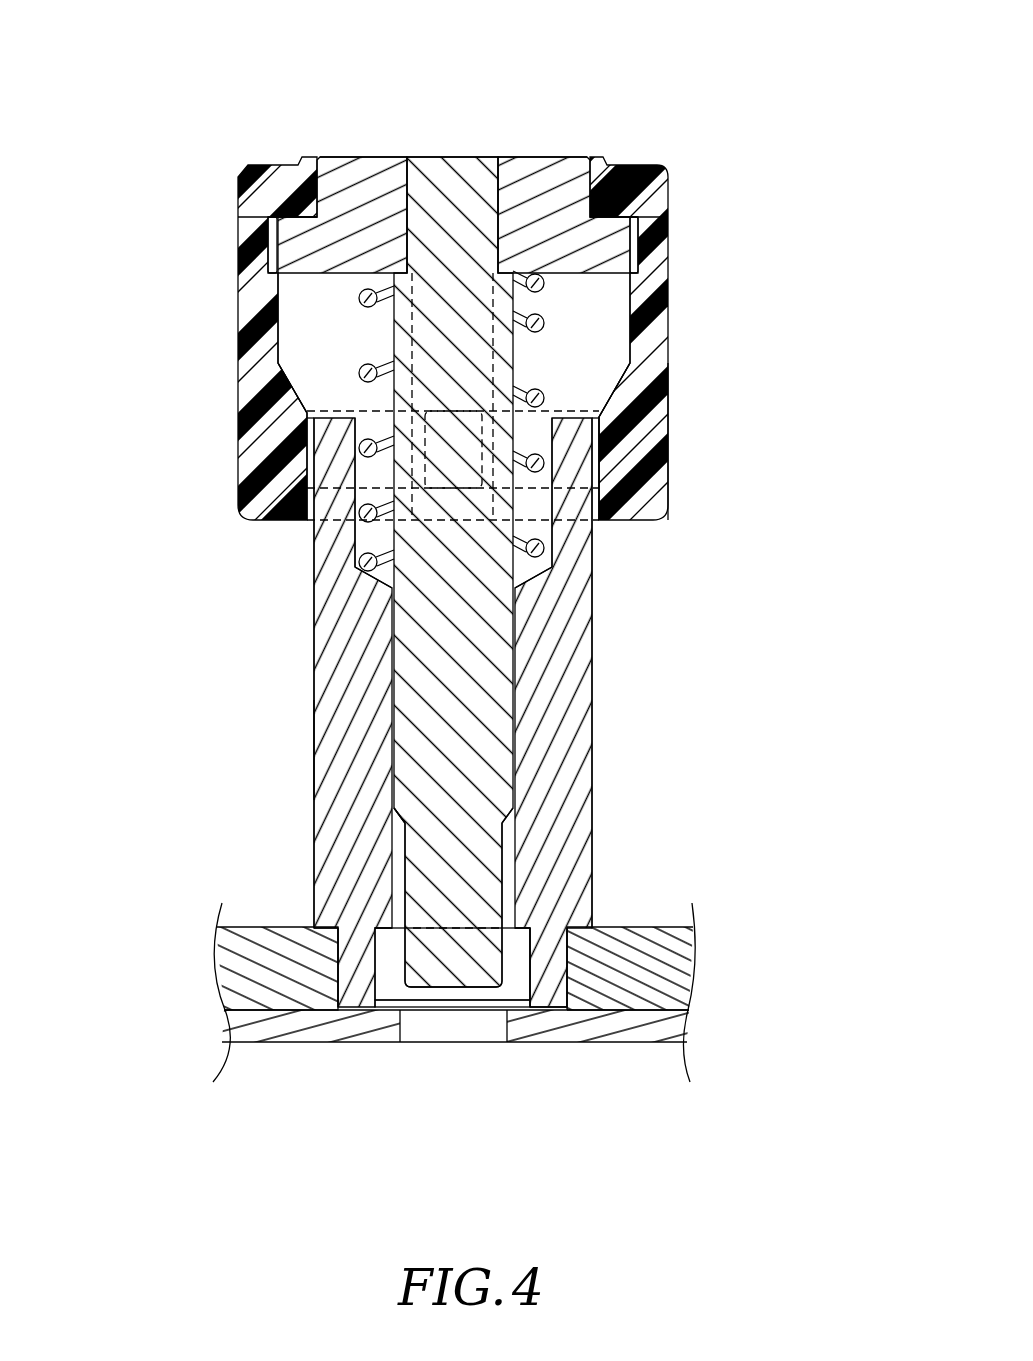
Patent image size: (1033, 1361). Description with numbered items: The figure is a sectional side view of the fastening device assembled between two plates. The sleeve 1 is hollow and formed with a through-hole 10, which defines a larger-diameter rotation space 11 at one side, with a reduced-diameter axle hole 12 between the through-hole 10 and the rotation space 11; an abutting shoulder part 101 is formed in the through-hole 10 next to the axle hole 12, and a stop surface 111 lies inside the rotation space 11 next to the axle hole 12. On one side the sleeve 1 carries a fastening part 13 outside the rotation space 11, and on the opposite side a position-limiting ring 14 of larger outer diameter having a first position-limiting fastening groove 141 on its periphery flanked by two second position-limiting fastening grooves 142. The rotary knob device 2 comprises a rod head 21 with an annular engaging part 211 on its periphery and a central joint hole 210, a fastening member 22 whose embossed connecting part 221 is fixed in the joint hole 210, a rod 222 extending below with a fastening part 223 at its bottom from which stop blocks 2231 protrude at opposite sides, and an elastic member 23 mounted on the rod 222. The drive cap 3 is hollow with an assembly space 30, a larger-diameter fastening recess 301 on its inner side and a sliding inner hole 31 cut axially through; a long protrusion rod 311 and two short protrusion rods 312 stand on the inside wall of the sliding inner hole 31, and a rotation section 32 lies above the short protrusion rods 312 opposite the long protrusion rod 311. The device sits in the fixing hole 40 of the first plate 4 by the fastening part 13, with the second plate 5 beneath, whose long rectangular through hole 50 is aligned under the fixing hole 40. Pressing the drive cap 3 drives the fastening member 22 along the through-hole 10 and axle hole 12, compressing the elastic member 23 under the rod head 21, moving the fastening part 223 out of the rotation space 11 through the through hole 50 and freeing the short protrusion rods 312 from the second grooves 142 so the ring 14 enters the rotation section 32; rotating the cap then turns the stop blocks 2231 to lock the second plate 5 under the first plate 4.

The sleeve 1 is at (298, 739).
The through-hole 10 is at (357, 538).
The abutting shoulder part 101 is at (386, 586).
The rotation space 11 is at (387, 978).
The stop surface 111 is at (380, 930).
The axle hole 12 is at (402, 852).
The fastening part 13 is at (345, 977).
The position-limiting ring 14 is at (140, 375).
The first position-limiting fastening groove 141 is at (345, 398).
The second position-limiting fastening groove 142 is at (307, 473).
The rotary knob device 2 is at (331, 85).
The rod head 21 is at (346, 178).
The joint hole 210 is at (413, 200).
The annular engaging part 211 is at (272, 232).
The fastening member 22 is at (212, 672).
The connecting part 221 is at (475, 200).
The rod 222 is at (423, 643).
The fastening part 223 is at (549, 1124).
The stop block 2231 is at (505, 973).
The elastic member 23 is at (365, 352).
The drive cap 3 is at (658, 202).
The assembly space 30 is at (763, 265).
The fastening recess 301 is at (640, 248).
The sliding inner hole 31 is at (763, 405).
The long protrusion rod 311 is at (513, 371).
The short protrusion rod 312 is at (607, 485).
The rotation section 32 is at (596, 343).
The first plate 4 is at (660, 972).
The fixing hole 40 is at (548, 975).
The second plate 5 is at (680, 1028).
The through hole 50 is at (507, 1020).